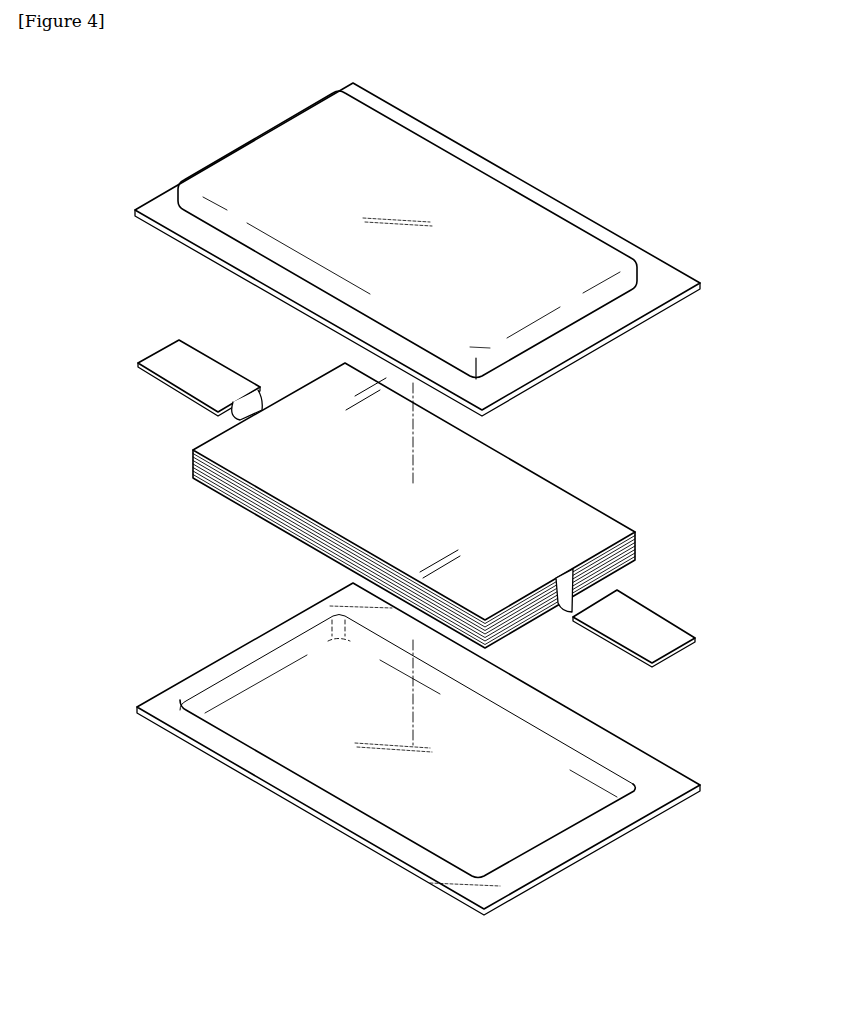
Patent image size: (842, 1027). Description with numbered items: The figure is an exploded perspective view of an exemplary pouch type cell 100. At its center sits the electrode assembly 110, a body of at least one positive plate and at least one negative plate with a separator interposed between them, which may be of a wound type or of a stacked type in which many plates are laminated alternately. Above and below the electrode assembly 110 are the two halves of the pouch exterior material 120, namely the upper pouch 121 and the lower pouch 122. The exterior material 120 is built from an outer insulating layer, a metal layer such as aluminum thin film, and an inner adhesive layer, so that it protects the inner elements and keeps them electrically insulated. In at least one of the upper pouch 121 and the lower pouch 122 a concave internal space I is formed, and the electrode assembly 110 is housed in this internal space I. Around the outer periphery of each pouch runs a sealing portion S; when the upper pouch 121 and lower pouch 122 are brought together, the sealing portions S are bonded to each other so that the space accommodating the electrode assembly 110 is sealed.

The pouch type cell 100 is at (400, 499).
The electrode assembly 110 is at (562, 501).
The pouch exterior material 120 is at (361, 459).
The upper pouch 121 is at (180, 225).
The lower pouch 122 is at (180, 693).
The internal space I is at (540, 221).
The sealing portion S is at (667, 277).